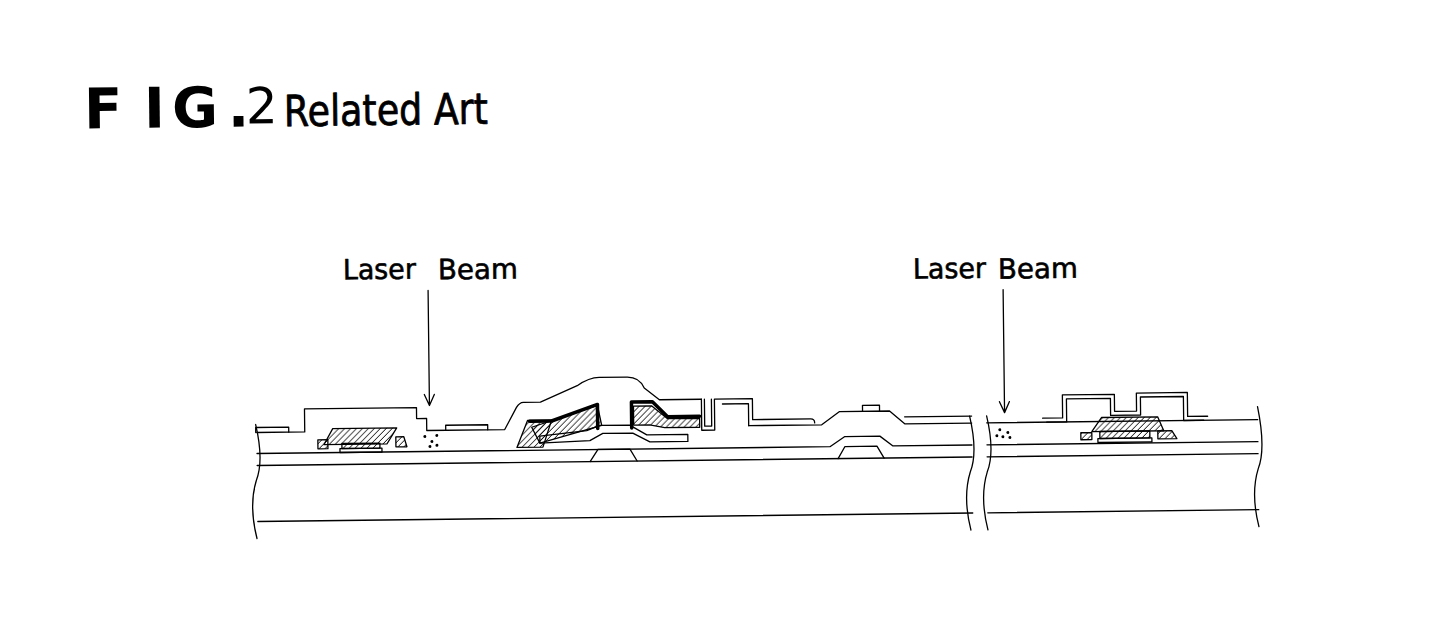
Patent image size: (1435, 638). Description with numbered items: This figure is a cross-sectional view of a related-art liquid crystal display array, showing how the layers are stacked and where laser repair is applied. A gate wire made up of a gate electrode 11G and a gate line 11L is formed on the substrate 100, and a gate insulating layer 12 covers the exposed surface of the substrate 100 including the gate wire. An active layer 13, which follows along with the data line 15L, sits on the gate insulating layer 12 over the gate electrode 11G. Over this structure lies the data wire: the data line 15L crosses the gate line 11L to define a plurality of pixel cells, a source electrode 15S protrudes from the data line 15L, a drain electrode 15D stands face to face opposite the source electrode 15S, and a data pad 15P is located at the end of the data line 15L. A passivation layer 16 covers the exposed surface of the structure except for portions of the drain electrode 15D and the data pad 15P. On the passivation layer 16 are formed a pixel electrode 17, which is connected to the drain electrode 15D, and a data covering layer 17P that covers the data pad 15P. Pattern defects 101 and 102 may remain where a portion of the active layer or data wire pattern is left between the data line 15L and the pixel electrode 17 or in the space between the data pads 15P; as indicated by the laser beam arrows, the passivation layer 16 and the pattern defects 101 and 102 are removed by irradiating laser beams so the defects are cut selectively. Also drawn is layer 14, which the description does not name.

The substrate 100 is at (1262, 501).
The pattern defect 101 is at (440, 457).
The pattern defect 102 is at (1003, 448).
The gate electrode 11G is at (607, 464).
The gate line 11L is at (858, 462).
The gate insulating layer 12 is at (1262, 453).
The active layer 13 is at (357, 453).
The semiconductor layer 14 is at (380, 448).
The source electrode 15S is at (598, 394).
The drain electrode 15D is at (650, 396).
The data line 15L is at (343, 429).
The data pad 15P is at (1162, 445).
The passivation layer 16 is at (303, 438).
The pixel electrode 17 is at (275, 426).
The data covering layer 17P is at (1145, 403).